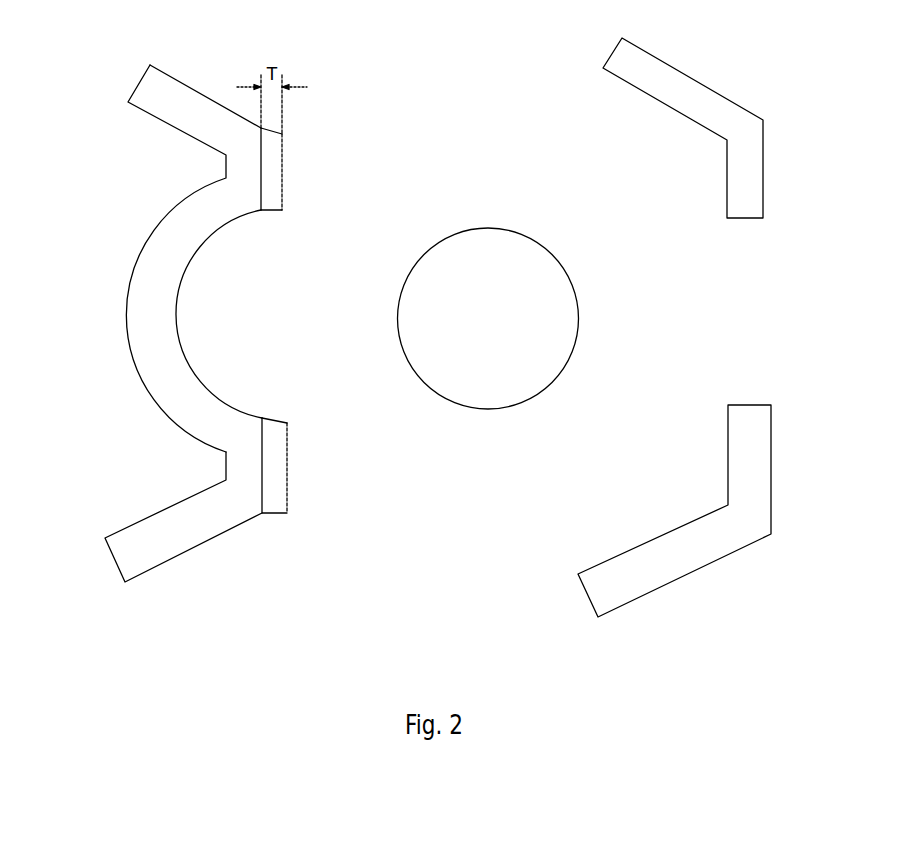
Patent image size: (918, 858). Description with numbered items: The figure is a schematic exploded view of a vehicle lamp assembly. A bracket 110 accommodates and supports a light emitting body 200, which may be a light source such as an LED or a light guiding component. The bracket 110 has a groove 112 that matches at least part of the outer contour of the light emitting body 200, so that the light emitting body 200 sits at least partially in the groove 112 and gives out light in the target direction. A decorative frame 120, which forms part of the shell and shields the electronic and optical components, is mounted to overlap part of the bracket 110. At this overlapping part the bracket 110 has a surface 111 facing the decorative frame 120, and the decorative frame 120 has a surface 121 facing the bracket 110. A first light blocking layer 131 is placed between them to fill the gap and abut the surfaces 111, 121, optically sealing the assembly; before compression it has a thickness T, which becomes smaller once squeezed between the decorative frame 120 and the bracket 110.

The bracket 110 is at (158, 350).
The surface 111 is at (237, 530).
The groove 112 is at (257, 342).
The first light blocking layer 131 is at (267, 178).
The decorative frame 120 is at (680, 94).
The surface 121 is at (727, 455).
The light emitting body 200 is at (490, 348).